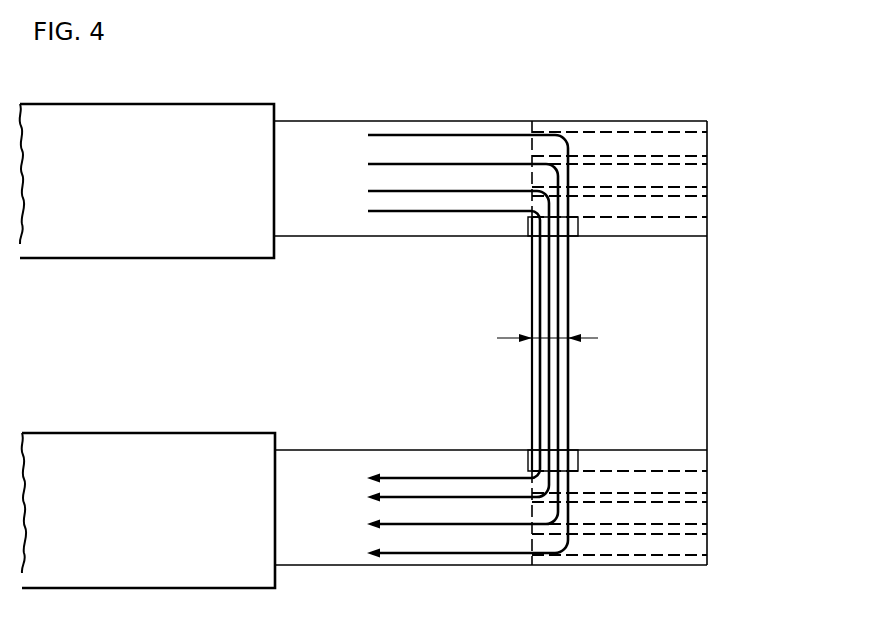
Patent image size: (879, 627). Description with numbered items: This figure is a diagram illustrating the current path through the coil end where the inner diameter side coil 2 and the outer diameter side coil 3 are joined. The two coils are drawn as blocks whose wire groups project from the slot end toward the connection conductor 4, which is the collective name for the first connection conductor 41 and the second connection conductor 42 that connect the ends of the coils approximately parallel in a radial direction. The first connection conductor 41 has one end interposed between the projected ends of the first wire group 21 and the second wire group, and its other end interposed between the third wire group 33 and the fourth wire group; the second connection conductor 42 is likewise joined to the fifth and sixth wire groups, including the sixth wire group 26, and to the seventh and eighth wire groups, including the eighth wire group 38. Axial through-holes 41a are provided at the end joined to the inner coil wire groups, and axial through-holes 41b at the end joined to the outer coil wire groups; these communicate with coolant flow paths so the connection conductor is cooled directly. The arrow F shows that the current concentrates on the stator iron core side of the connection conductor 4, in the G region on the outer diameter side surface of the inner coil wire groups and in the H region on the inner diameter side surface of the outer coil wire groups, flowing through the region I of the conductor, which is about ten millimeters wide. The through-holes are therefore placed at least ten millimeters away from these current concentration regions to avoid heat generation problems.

The inner diameter side coil 2 is at (159, 445).
The outer diameter side coil 3 is at (158, 118).
The connection conductor 4 is at (688, 320).
The first connection conductor 41 is at (490, 178).
The second connection conductor 42 is at (491, 507).
The axial through-holes 41a is at (707, 480).
The axial through-holes 41b is at (707, 142).
The first wire group 21 is at (605, 566).
The sixth wire group 26 is at (619, 544).
The third wire group 33 is at (606, 128).
The eighth wire group 38 is at (619, 206).
The arrow F is at (468, 133).
The G region G is at (528, 463).
The H region H is at (528, 225).
The region I is at (553, 340).